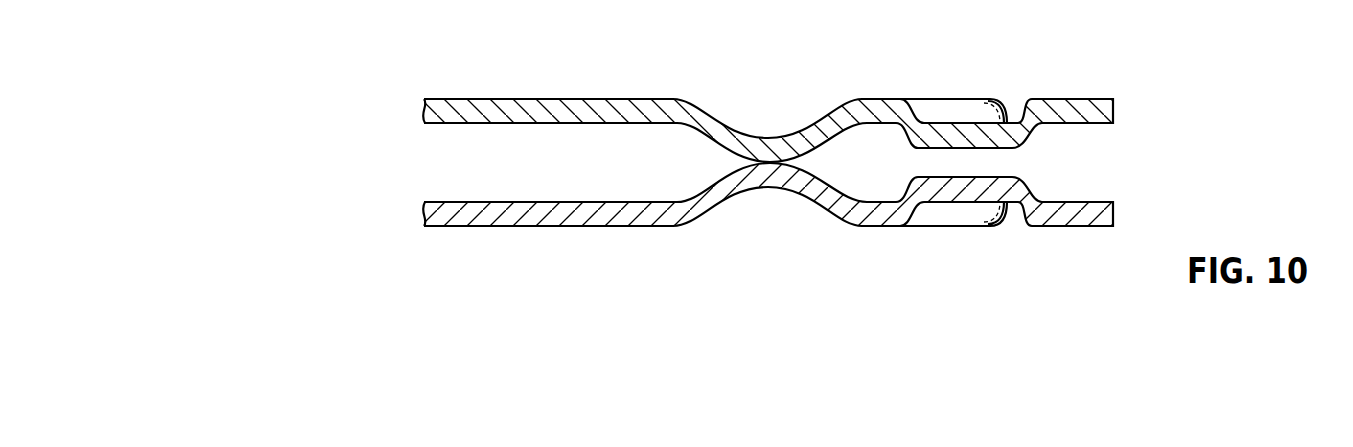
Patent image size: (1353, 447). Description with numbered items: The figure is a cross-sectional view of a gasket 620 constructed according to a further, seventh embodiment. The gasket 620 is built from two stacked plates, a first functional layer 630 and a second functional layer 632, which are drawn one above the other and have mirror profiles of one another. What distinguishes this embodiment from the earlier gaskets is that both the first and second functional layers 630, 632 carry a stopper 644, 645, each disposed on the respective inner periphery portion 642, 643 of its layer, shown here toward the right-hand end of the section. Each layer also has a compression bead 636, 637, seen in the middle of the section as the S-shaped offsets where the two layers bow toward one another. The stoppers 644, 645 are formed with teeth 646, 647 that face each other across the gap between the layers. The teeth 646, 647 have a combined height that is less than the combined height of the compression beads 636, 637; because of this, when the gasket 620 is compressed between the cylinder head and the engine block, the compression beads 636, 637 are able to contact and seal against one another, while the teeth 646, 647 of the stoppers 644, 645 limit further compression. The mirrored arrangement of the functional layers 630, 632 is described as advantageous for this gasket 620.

The gasket 620 is at (794, 160).
The first functional layer 630 is at (784, 103).
The second functional layer 632 is at (794, 222).
The compression bead 636 is at (802, 122).
The compression bead 637 is at (791, 195).
The inner periphery portion 642 is at (1071, 120).
The inner periphery portion 643 is at (1085, 202).
The stopper 644 is at (1009, 113).
The stopper 645 is at (1002, 208).
The tooth 646 is at (1010, 149).
The tooth 647 is at (1012, 177).